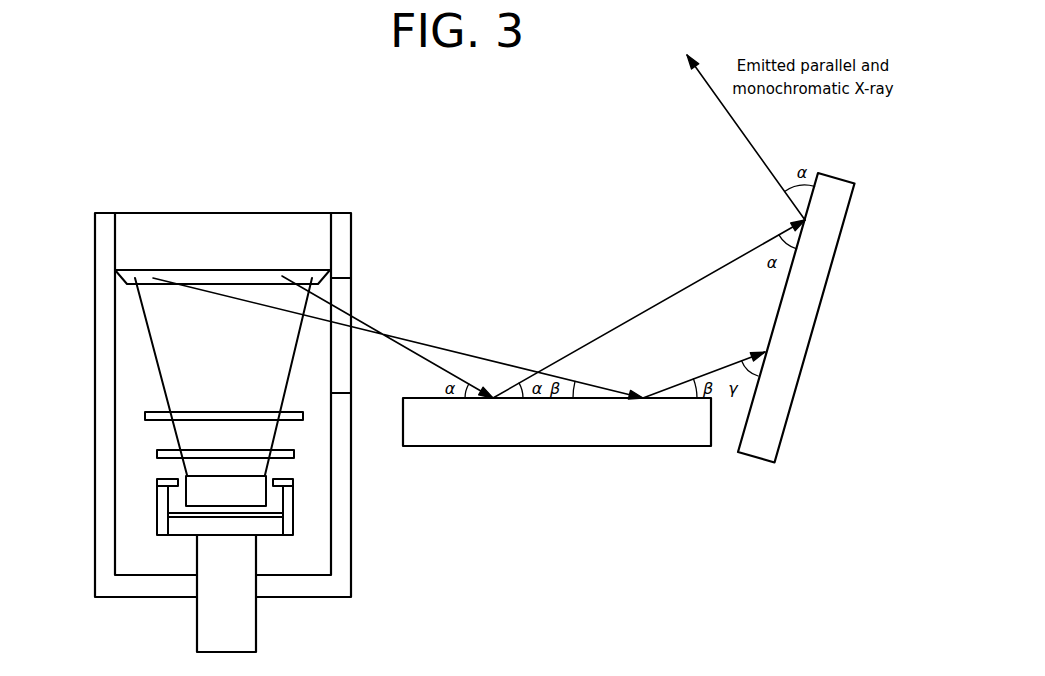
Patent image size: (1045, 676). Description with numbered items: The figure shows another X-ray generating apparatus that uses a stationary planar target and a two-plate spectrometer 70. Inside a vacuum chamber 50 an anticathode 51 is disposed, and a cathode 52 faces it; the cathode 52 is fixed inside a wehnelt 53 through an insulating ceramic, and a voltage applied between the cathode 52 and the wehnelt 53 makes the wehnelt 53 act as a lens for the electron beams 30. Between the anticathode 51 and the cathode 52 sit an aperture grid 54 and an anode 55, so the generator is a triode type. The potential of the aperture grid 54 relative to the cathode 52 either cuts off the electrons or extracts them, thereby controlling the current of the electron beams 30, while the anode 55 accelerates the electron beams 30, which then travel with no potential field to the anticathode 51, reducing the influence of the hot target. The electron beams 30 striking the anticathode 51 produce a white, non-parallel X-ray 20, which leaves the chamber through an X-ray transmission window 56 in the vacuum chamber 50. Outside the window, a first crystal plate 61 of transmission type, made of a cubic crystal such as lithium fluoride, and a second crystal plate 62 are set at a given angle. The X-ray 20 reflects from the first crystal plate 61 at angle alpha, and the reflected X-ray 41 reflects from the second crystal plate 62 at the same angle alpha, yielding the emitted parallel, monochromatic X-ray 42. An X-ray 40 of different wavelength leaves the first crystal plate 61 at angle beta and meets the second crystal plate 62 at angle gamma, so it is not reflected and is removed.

The X-ray 20 is at (427, 345).
The electron beams 30 is at (167, 370).
The X-ray 40 is at (728, 366).
The reflected X-ray 41 is at (637, 314).
The emitted parallel monochromatic X-ray 42 is at (738, 122).
The vacuum chamber 50 is at (343, 500).
The anticathode 51 is at (120, 247).
The cathode 52 is at (255, 497).
The wehnelt 53 is at (273, 522).
The aperture grid 54 is at (158, 452).
The anode 55 is at (145, 413).
The X-ray transmission window 56 is at (342, 348).
The first crystal plate 61 is at (600, 438).
The second crystal plate 62 is at (810, 313).
The spectrometer 70 is at (584, 178).